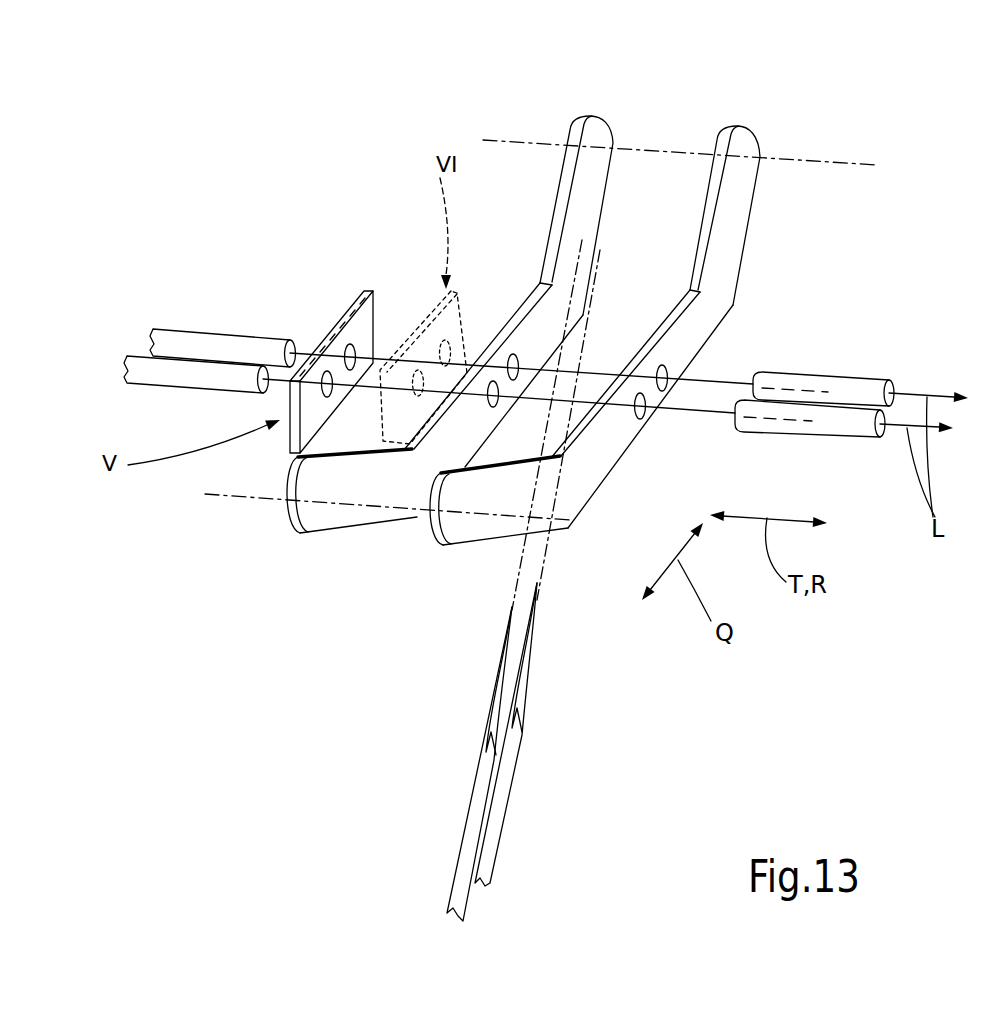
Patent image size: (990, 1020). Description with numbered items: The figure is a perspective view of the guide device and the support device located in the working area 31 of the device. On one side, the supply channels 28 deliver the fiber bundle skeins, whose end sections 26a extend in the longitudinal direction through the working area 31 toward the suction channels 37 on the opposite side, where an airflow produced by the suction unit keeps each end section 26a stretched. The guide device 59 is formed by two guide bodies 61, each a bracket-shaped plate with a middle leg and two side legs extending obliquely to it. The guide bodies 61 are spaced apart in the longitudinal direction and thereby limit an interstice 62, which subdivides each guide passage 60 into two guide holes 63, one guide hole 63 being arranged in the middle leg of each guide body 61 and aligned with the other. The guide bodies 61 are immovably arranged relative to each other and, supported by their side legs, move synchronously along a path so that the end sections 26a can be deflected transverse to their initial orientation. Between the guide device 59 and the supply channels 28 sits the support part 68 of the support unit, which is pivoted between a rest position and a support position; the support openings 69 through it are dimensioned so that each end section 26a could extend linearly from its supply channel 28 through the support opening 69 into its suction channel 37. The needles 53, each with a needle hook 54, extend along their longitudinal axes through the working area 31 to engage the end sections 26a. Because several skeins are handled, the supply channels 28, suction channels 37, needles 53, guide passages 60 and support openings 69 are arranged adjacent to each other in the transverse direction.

The supply channel 28 is at (213, 343).
The end section 26a is at (693, 411).
The working area 31 is at (502, 739).
The suction channel 37 is at (840, 417).
The needle 53 is at (473, 818).
The needle hook 54 is at (484, 733).
The guide device 59 is at (562, 325).
The guide passage 60 is at (624, 425).
The guide body 61 is at (587, 197).
The interstice 62 is at (620, 311).
The guide hole 63 is at (514, 355).
The support part 68 is at (421, 318).
The support opening 69 is at (353, 300).